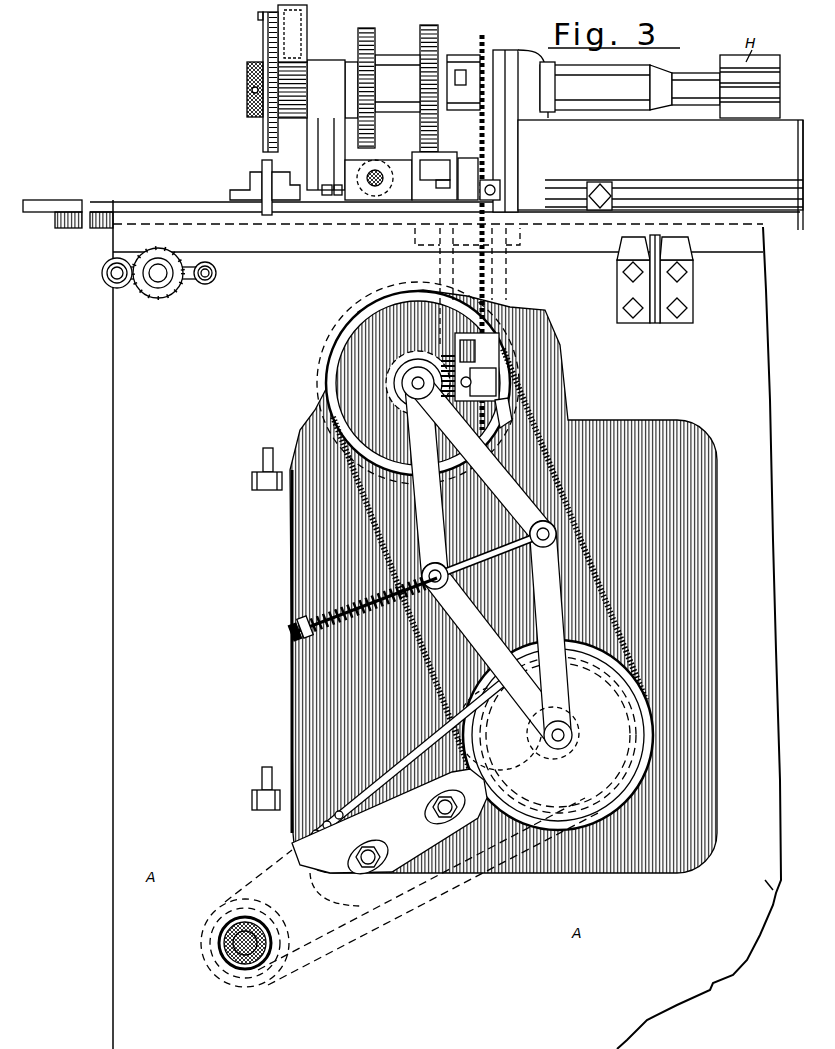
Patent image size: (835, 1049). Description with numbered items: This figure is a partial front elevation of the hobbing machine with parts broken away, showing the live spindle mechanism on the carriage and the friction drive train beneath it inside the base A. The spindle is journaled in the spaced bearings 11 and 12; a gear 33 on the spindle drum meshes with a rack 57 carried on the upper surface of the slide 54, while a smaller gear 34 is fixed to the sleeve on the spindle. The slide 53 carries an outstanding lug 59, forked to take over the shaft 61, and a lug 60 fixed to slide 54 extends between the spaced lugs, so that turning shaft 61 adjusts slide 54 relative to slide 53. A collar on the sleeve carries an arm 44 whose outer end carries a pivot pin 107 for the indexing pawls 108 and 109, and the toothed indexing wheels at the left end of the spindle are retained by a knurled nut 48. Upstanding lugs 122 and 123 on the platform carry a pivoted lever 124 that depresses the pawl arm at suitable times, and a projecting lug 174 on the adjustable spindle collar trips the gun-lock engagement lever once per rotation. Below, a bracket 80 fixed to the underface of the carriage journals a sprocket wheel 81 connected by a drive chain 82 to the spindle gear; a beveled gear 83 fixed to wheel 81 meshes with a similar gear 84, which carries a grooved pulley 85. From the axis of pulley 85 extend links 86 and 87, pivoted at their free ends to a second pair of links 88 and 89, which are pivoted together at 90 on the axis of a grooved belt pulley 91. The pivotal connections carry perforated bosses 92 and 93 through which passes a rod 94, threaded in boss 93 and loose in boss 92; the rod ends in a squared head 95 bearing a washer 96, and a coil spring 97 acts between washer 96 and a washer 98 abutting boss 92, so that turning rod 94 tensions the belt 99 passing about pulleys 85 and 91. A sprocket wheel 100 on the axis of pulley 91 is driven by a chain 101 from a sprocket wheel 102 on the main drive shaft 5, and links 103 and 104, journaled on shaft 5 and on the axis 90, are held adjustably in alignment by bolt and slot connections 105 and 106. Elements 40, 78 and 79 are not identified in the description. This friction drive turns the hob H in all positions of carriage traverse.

The main drive shaft 5 is at (242, 948).
The bearing 11 is at (312, 142).
The bearing 12 is at (510, 143).
The gear 33 is at (440, 23).
The smaller gear 34 is at (365, 72).
The gear 40 is at (373, 32).
The arm 44 is at (292, 45).
The knurled nut 48 is at (247, 76).
The slide 53 is at (433, 176).
The slide 54 is at (446, 177).
The rack 57 is at (465, 158).
The lug 59 is at (411, 624).
The lug 60 is at (385, 165).
The shaft 61 is at (382, 183).
The hand wheel 78 is at (180, 263).
The dial 79 is at (172, 292).
The bracket 80 is at (440, 270).
The sprocket wheel 81 is at (504, 412).
The drive chain 82 is at (490, 48).
The beveled gear 83 is at (420, 372).
The gear 84 is at (322, 352).
The grooved pulley 85 is at (330, 415).
The link 86 is at (424, 479).
The link 87 is at (480, 458).
The link 88 is at (496, 655).
The link 89 is at (547, 634).
The pivot 90 is at (566, 736).
The grooved belt pulley 91 is at (645, 745).
The perforated boss 92 is at (429, 500).
The perforated boss 93 is at (510, 500).
The rod 94 is at (500, 548).
The squared head 95 is at (292, 635).
The washer 96 is at (297, 624).
The coil spring 97 is at (327, 622).
The washer 98 is at (410, 582).
The belt 99 is at (545, 440).
The sprocket wheel 100 is at (500, 728).
The chain 101 is at (408, 905).
The sprocket wheel 102 is at (276, 975).
The link 103 is at (389, 821).
The link 104 is at (485, 873).
The bolt and slot connection 105 is at (384, 856).
The bolt and slot connection 106 is at (436, 806).
The pivot pin 107 is at (303, 33).
The pawl 108 is at (264, 40).
The pawl 109 is at (262, 16).
The upstanding lug 122 is at (235, 187).
The upstanding lug 123 is at (287, 178).
The lever 124 is at (264, 165).
The projecting lug 174 is at (461, 70).